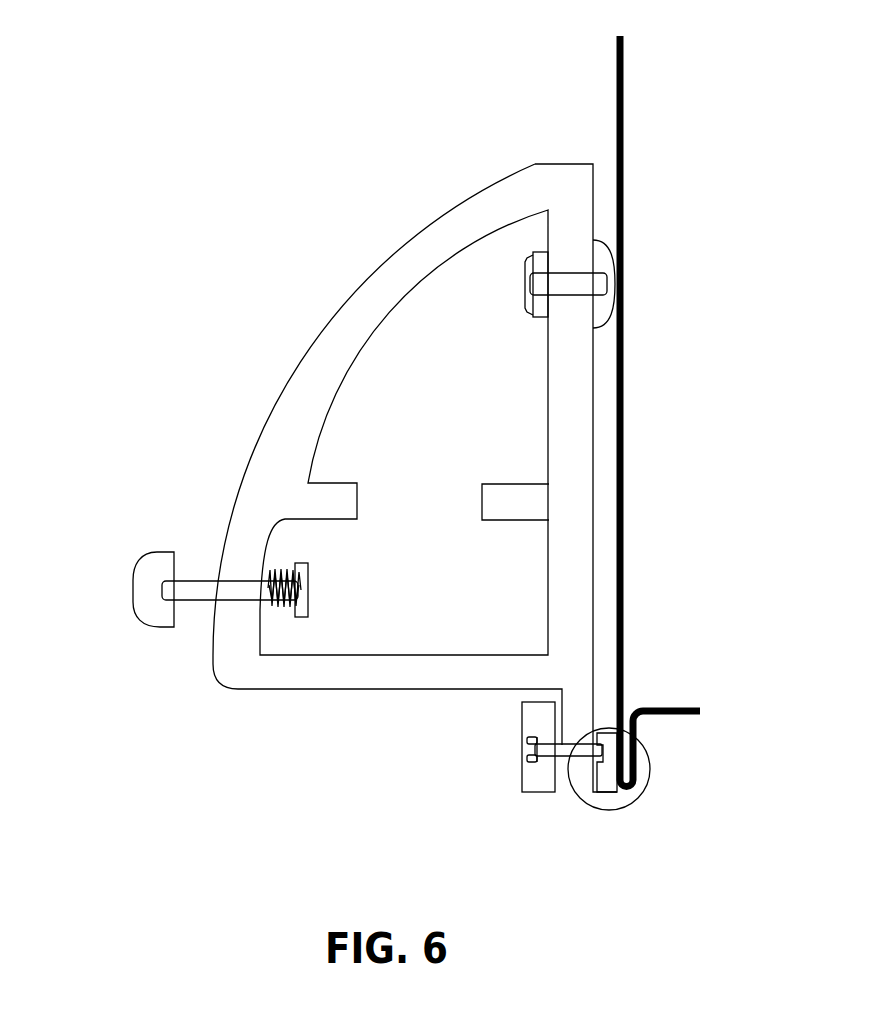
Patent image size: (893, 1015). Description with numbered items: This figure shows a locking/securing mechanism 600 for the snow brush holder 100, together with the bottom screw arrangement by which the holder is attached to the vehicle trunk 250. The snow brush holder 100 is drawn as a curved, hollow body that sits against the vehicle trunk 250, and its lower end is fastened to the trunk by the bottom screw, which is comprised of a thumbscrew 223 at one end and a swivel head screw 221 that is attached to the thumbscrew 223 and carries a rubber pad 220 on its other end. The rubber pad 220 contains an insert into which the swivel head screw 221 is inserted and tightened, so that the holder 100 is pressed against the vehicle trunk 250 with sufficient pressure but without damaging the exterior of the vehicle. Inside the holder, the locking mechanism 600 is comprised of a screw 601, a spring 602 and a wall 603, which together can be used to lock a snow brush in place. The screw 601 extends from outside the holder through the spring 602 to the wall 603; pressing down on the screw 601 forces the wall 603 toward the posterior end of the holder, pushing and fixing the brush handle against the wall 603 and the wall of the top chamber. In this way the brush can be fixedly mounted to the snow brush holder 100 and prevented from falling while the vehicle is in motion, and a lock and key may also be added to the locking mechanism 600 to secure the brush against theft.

The snow brush holder 100 is at (517, 125).
The vehicle trunk 250 is at (622, 448).
The locking/securing mechanism 600 is at (219, 555).
The screw 601 is at (145, 608).
The spring 602 is at (270, 607).
The wall 603 is at (308, 597).
The thumbscrew 223 is at (535, 783).
The swivel head screw 221 is at (563, 752).
The rubber pad 220 is at (610, 755).